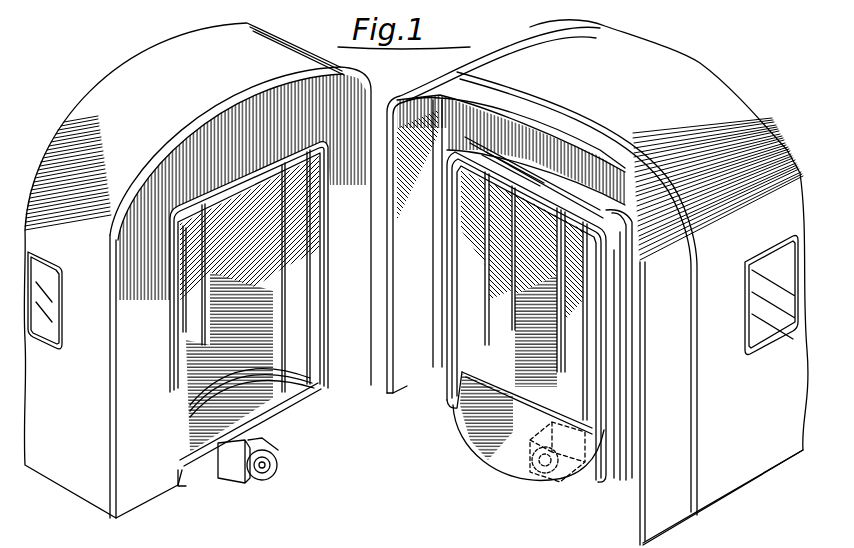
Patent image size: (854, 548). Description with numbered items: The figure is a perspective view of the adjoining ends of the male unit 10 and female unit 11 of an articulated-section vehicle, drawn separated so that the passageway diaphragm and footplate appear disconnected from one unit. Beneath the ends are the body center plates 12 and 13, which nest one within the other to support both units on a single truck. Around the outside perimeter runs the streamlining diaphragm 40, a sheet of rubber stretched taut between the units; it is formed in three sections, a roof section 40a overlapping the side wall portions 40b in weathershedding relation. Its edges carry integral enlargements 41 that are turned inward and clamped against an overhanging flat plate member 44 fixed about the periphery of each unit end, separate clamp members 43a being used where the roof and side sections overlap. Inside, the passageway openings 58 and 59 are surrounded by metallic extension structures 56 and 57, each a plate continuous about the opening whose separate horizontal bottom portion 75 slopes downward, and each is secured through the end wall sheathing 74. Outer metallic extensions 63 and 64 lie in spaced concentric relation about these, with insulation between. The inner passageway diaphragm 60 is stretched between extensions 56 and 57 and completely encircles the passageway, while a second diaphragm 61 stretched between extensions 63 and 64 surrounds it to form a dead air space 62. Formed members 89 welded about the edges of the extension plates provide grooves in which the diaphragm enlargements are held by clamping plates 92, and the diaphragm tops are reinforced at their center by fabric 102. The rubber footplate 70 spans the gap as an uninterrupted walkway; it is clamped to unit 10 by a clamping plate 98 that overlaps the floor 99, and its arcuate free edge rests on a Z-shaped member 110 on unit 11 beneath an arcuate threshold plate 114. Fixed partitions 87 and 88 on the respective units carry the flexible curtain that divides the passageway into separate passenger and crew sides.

The male unit 10 is at (693, 77).
The female unit 11 is at (137, 66).
The body center plate 12 is at (537, 427).
The body center plate 13 is at (280, 465).
The diaphragm 40 is at (560, 110).
The top section 40a is at (600, 132).
The side wall portion 40b is at (407, 373).
The enlargement 41 is at (390, 283).
The clamp member 43a is at (448, 102).
The overhanging flat plate member 44 is at (200, 118).
The metallic extension structure 56 is at (492, 295).
The metallic extension structure 57 is at (313, 287).
The passageway opening 58 is at (580, 247).
The passageway opening 59 is at (222, 218).
The diaphragm 60 is at (465, 370).
The second diaphragm 61 is at (482, 153).
The dead air space 62 is at (600, 388).
The metallic extension 63 is at (627, 375).
The metallic extension 64 is at (173, 350).
The footplate 70 is at (480, 453).
The end wall sheathing 74 is at (245, 110).
The horizontal bottom portion 75 is at (290, 397).
The fixed partition 87 is at (604, 342).
The fixed partition 88 is at (193, 327).
The formed member 89 is at (323, 324).
The clamping plate 92 is at (492, 265).
The clamping plate 98 is at (600, 425).
The floor 99 is at (250, 327).
The fabric 102 is at (540, 183).
The Z-shaped member 110 is at (287, 387).
The arcuate threshold plate 114 is at (287, 373).